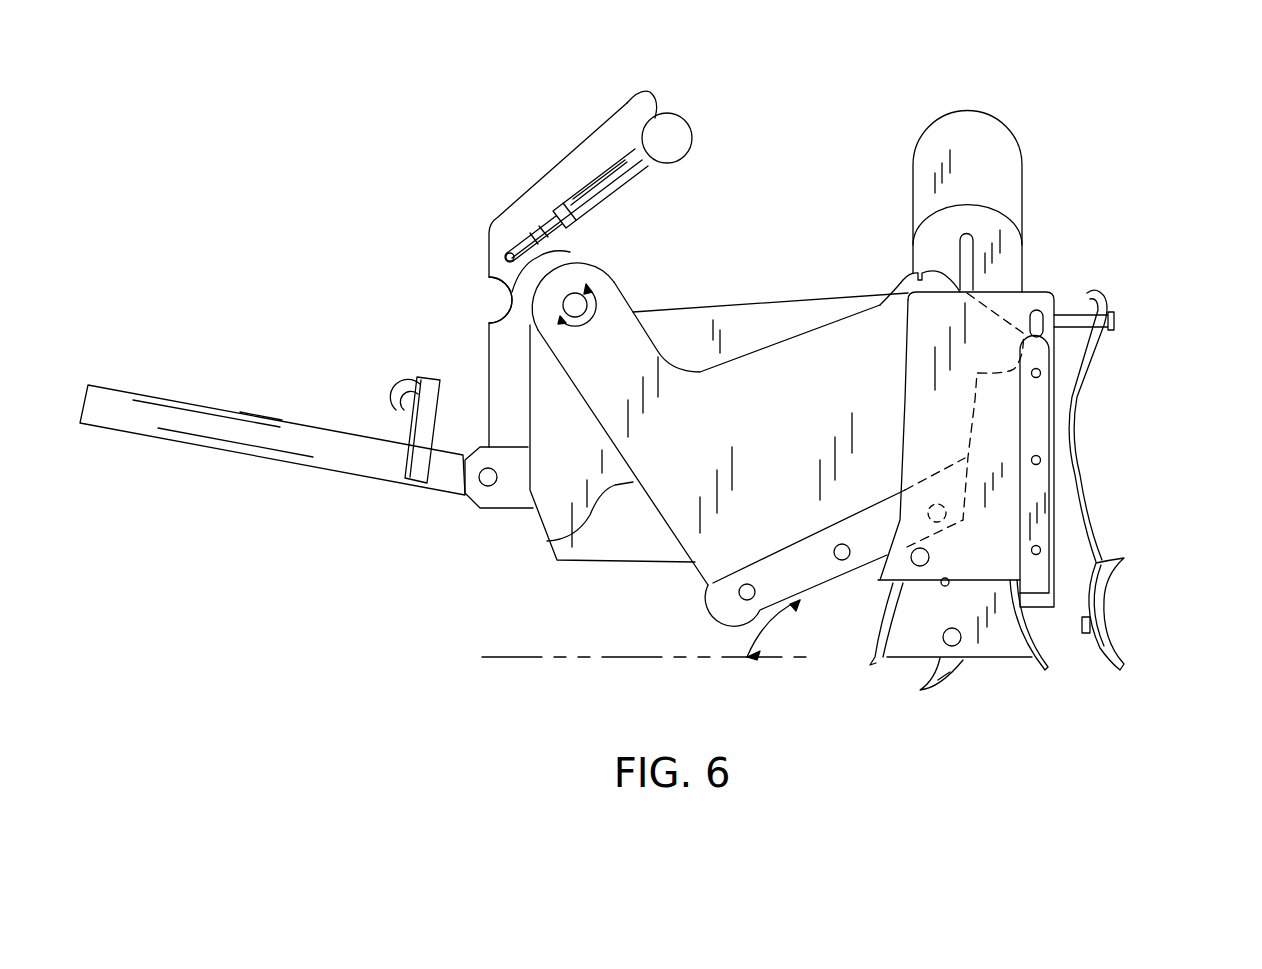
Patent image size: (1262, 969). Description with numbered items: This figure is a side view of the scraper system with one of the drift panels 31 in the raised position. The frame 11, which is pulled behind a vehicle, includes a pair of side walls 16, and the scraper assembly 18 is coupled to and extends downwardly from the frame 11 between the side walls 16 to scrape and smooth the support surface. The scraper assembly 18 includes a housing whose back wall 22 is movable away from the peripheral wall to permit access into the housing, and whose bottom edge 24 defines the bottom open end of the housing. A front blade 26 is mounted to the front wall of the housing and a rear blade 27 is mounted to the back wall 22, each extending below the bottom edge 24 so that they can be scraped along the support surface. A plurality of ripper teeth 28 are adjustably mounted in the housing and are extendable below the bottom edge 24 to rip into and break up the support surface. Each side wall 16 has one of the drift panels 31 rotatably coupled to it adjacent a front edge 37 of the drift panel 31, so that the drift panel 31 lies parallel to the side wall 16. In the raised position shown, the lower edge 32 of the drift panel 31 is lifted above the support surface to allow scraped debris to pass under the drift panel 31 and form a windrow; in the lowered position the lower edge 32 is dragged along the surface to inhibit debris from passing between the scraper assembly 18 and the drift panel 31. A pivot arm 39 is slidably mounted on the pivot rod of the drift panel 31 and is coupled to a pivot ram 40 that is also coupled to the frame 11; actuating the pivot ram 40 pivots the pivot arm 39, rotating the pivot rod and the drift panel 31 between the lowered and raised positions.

The frame 11 is at (490, 223).
The side wall 16 is at (747, 312).
The scraper assembly 18 is at (993, 117).
The back wall 22 is at (1078, 435).
The bottom edge 24 is at (993, 658).
The front blade 26 is at (878, 662).
The rear blade 27 is at (1100, 607).
The ripper teeth 28 is at (942, 682).
The drift panel 31 is at (720, 560).
The lower edge 32 is at (813, 587).
The front edge 37 is at (547, 541).
The pivot arm 39 is at (512, 290).
The pivot ram 40 is at (578, 170).